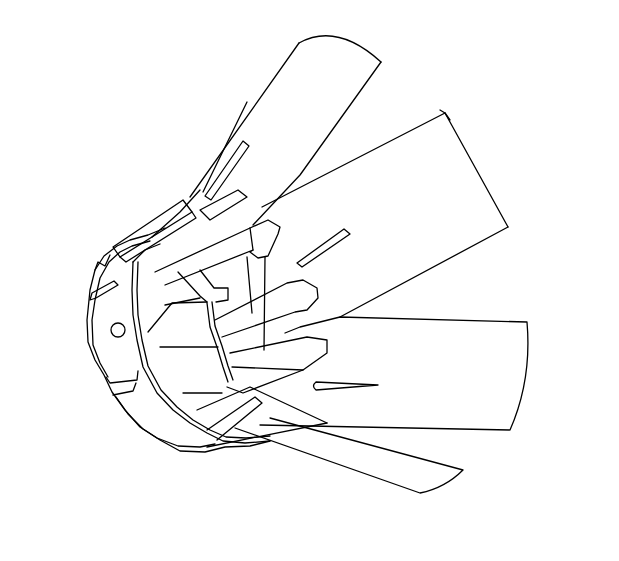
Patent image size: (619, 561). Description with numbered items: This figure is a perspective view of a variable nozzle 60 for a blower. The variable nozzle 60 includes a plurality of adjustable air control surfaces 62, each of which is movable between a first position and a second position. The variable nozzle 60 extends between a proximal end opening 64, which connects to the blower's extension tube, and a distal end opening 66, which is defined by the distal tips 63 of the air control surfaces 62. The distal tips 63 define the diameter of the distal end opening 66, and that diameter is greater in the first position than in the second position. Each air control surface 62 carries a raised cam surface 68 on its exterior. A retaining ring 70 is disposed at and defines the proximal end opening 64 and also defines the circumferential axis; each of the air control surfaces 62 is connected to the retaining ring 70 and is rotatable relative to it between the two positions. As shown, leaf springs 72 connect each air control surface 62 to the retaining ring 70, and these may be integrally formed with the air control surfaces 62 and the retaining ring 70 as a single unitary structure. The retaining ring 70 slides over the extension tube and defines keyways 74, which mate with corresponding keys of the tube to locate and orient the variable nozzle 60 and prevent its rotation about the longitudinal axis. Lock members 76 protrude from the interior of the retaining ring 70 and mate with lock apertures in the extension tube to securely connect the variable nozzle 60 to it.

The variable nozzle 60 is at (97, 174).
The adjustable air control surfaces 62 is at (297, 94).
The distal tips 63 is at (362, 61).
The proximal end opening 64 is at (150, 426).
The distal end opening 66 is at (472, 132).
The raised cam surface 68 is at (223, 167).
The retaining ring 70 is at (92, 275).
The leaf springs 72 is at (278, 358).
The keyways 74 is at (72, 294).
The lock members 76 is at (113, 343).